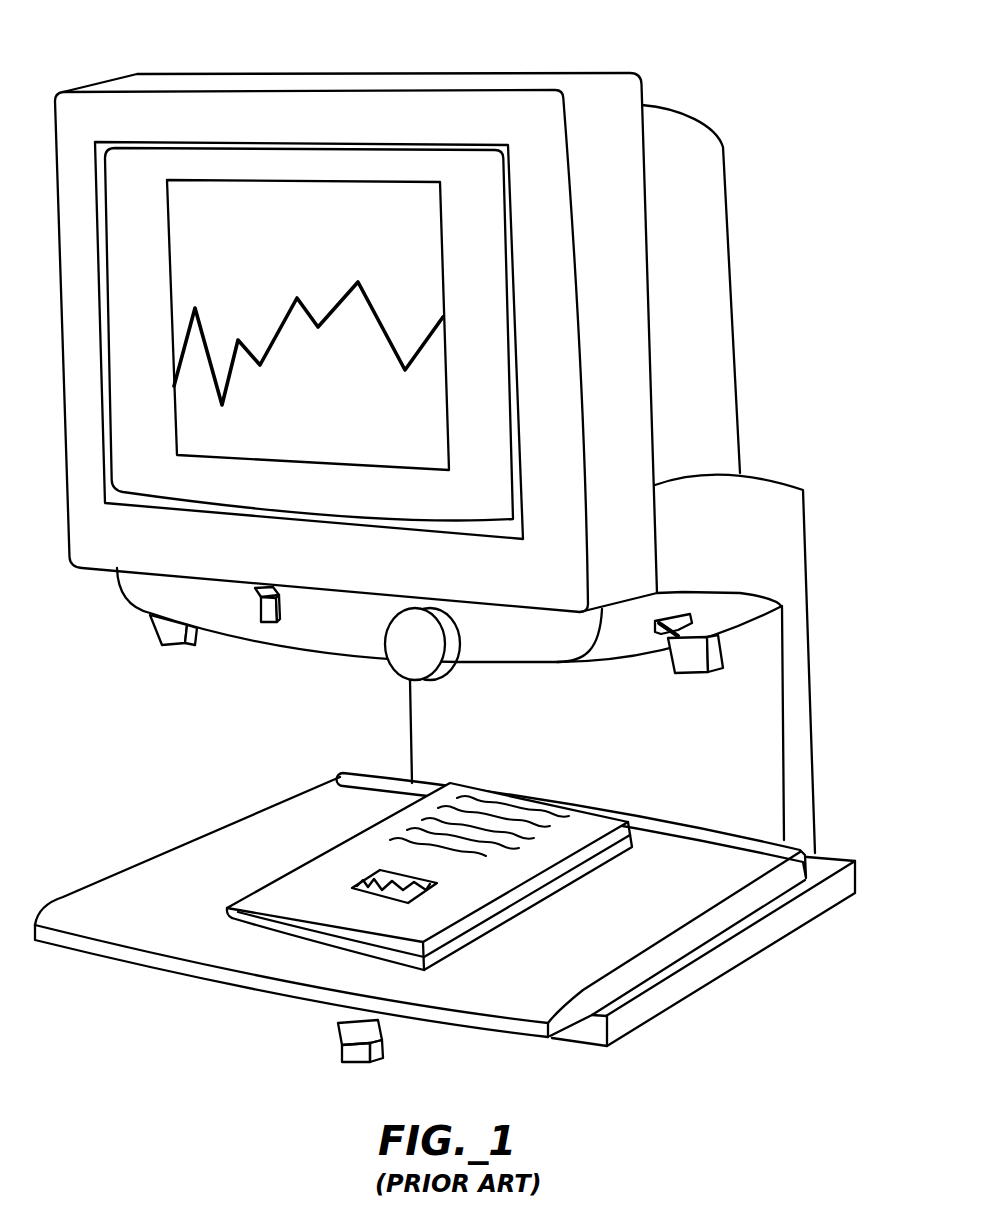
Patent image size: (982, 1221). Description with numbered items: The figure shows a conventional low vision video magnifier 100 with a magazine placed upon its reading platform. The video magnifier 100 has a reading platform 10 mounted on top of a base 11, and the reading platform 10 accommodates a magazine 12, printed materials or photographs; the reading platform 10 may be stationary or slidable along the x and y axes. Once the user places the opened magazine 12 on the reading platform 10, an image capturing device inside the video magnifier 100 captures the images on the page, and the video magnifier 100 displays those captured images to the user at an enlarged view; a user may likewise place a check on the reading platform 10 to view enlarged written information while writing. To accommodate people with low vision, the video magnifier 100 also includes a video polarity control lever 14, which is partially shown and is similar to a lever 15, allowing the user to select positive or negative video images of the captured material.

The video magnifier 100 is at (680, 52).
The reading platform 10 is at (148, 872).
The base 11 is at (700, 970).
The magazine 12 is at (337, 857).
The video polarity control lever 14 is at (167, 628).
The lever 15 is at (692, 662).